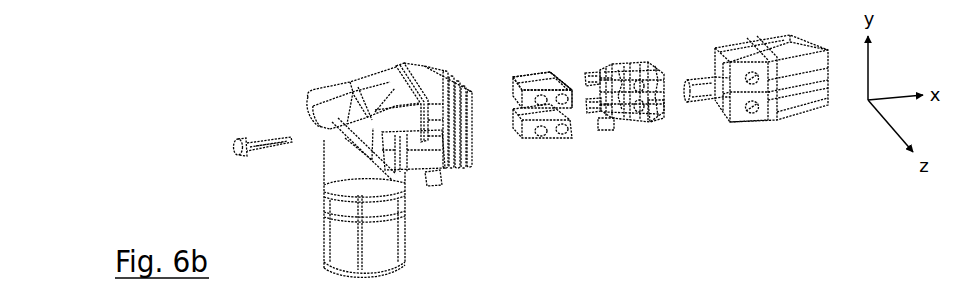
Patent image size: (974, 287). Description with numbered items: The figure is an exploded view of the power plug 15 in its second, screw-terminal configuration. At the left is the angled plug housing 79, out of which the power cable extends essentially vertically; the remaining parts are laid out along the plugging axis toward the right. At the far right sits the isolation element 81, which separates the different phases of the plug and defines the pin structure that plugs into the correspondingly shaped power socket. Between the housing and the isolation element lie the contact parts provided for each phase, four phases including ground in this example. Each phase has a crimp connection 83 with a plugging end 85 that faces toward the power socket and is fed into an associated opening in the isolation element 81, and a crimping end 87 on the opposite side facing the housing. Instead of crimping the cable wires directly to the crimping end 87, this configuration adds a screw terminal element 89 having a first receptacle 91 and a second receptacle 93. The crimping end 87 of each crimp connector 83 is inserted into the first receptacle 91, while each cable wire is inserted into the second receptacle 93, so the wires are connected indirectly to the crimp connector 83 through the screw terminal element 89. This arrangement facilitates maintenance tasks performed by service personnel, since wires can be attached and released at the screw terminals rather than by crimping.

The power plug 15 is at (249, 87).
The angled plug housing 79 is at (349, 106).
The isolation element 81 is at (788, 142).
The crimp connection 83 is at (638, 155).
The plugging end 85 is at (662, 121).
The crimping end 87 is at (612, 130).
The screw terminal element 89 is at (541, 58).
The first receptacle 91 is at (575, 95).
The second receptacle 93 is at (525, 103).